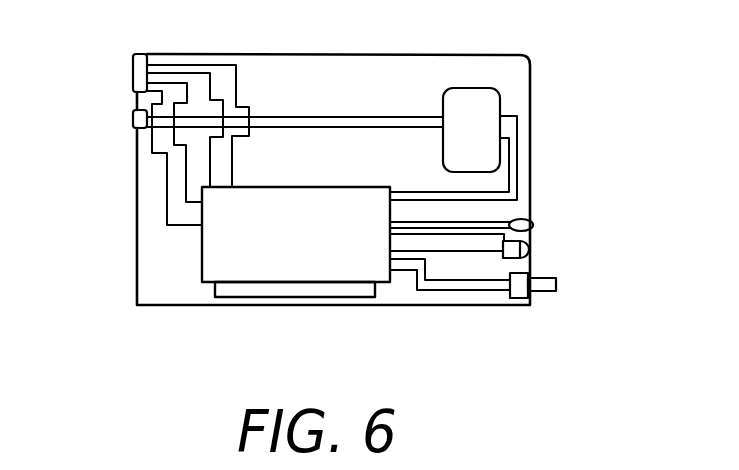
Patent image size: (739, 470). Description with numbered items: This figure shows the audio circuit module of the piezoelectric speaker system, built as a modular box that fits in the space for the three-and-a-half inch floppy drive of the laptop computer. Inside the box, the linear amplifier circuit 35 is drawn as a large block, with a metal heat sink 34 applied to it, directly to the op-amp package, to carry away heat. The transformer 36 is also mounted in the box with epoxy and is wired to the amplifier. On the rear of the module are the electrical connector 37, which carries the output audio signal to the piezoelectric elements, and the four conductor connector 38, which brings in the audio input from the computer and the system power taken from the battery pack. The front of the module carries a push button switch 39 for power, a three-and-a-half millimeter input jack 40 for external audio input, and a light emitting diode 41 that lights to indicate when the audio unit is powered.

The metal heat sink 34 is at (325, 290).
The linear amplifier circuit 35 is at (313, 210).
The transformer 36 is at (448, 88).
The electrical connector 37 is at (141, 117).
The four conductor connector 38 is at (141, 72).
The push button switch 39 is at (557, 283).
The 3.5 mm input jack 40 is at (532, 251).
The light emitting diode 41 is at (532, 221).